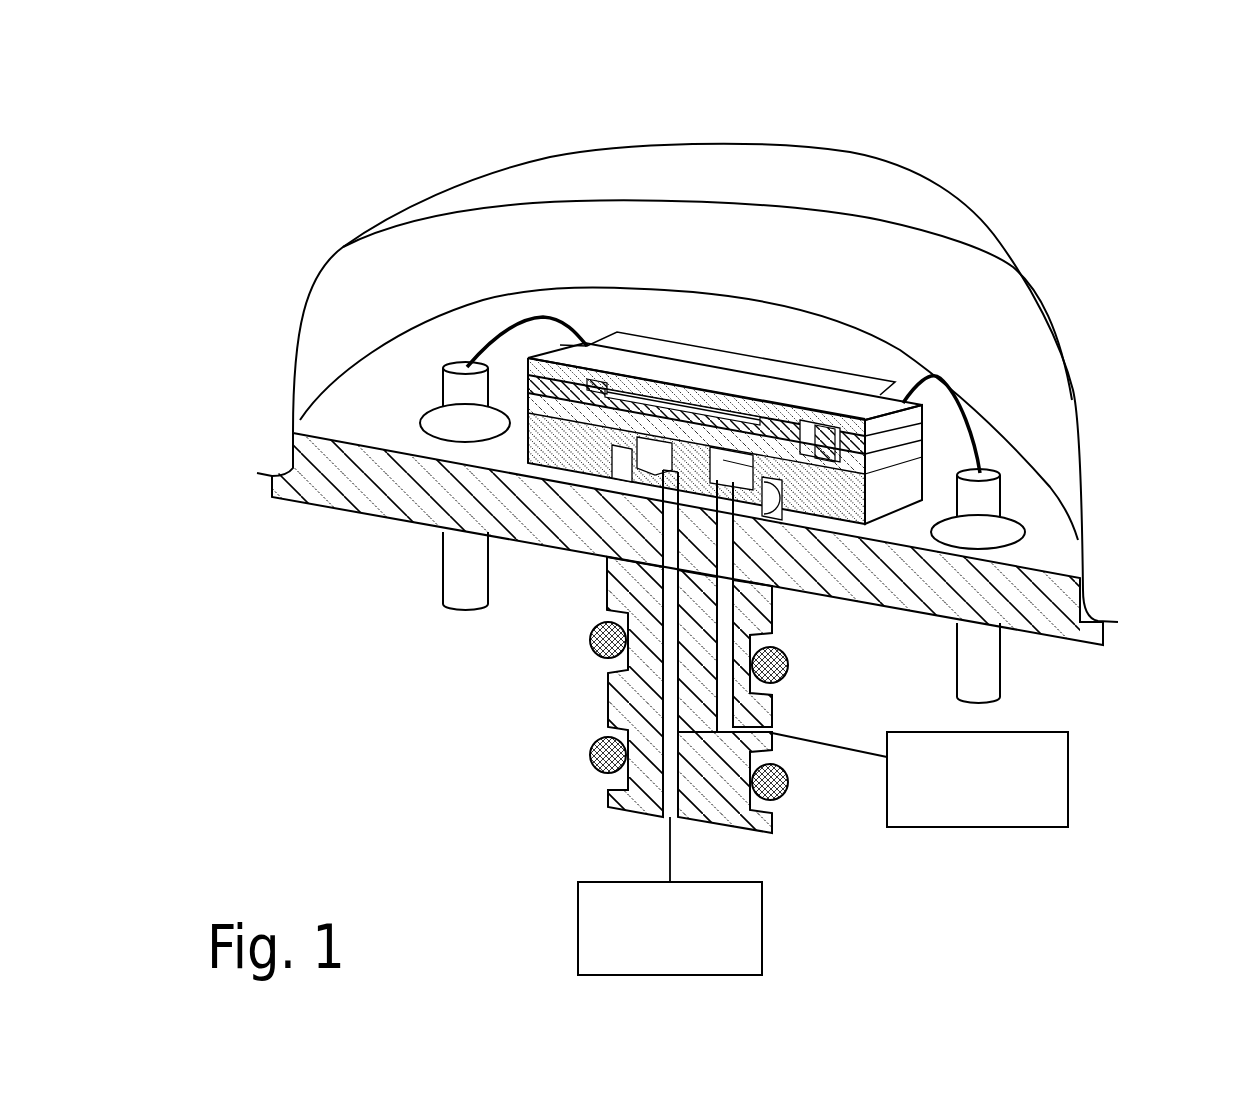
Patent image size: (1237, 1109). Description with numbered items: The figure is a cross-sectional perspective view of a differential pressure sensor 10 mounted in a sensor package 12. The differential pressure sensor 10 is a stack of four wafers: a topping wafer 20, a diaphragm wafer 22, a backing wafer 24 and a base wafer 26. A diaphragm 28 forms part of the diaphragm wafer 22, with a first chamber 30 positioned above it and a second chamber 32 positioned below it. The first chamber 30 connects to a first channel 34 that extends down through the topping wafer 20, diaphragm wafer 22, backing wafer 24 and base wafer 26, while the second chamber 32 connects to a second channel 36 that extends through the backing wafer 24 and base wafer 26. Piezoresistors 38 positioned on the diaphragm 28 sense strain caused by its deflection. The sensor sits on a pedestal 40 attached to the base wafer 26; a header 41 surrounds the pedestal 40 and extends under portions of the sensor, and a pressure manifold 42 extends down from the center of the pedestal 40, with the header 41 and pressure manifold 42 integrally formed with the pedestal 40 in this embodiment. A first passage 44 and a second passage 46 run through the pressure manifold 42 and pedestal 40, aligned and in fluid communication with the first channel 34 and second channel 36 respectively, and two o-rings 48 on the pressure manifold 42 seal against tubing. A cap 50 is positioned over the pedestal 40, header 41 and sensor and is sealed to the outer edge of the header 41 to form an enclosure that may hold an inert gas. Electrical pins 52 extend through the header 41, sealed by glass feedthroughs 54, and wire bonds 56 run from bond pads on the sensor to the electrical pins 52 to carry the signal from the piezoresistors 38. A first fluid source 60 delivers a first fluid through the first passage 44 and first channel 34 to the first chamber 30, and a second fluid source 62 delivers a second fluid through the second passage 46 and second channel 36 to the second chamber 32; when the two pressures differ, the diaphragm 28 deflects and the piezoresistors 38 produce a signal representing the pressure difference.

The differential pressure sensor 10 is at (764, 332).
The sensor package 12 is at (290, 162).
The topping wafer 20 is at (839, 366).
The diaphragm wafer 22 is at (915, 412).
The backing wafer 24 is at (915, 432).
The base wafer 26 is at (903, 470).
The diaphragm 28 is at (753, 420).
The first chamber 30 is at (619, 385).
The second chamber 32 is at (623, 402).
The first channel 34 is at (778, 428).
The second channel 36 is at (672, 430).
The piezoresistors 38 is at (667, 415).
The pedestal 40 is at (693, 530).
The header 41 is at (337, 487).
The pressure manifold 42 is at (622, 695).
The first passage 44 is at (727, 607).
The second passage 46 is at (670, 778).
The o-rings 48 is at (603, 640).
The cap 50 is at (442, 200).
The electrical pins 52 is at (450, 580).
The glass feedthrough 54 is at (430, 422).
The wire bonds 56 is at (513, 332).
The first fluid source 60 is at (1072, 778).
The second fluid source 62 is at (767, 937).